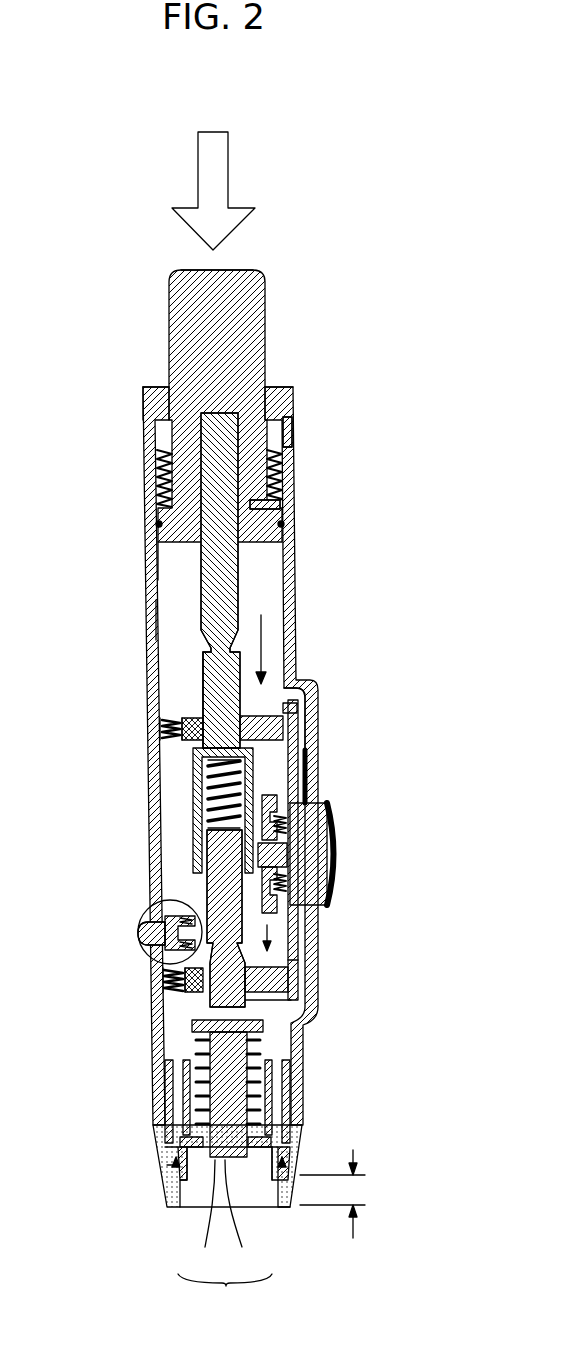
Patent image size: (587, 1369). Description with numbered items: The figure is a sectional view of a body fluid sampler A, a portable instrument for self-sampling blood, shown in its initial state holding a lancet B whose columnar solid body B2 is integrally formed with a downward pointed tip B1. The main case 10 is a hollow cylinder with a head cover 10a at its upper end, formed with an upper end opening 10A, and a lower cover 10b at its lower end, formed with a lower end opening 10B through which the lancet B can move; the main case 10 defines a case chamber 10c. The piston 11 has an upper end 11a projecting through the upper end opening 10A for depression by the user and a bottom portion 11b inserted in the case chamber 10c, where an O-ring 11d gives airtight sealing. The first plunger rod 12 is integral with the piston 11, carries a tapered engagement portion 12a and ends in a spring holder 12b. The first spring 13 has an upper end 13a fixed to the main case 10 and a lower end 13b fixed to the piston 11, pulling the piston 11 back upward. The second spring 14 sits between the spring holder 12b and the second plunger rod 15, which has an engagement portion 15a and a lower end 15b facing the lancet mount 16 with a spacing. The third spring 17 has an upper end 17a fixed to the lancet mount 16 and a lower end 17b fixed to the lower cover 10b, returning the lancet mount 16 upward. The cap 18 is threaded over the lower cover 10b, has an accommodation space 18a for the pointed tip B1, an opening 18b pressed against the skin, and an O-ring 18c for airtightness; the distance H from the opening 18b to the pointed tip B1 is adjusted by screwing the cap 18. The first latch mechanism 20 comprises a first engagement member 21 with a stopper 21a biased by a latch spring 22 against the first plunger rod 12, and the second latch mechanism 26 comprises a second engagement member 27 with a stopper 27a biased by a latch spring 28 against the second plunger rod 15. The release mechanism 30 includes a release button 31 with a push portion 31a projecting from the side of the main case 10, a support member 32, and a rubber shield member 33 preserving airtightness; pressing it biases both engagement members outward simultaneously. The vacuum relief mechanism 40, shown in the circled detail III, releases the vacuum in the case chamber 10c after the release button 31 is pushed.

The body fluid sampler A is at (300, 262).
The main case 10 is at (296, 606).
The head cover 10a is at (294, 395).
The upper end opening 10A is at (143, 386).
The lower cover 10b is at (290, 1140).
The lower end opening 10B is at (262, 1162).
The case chamber 10c is at (187, 613).
The piston 11 is at (272, 340).
The upper end of piston 11a is at (197, 268).
The bottom portion of piston 11b is at (160, 592).
The O-ring 11d is at (156, 527).
The first plunger rod 12 is at (227, 587).
The engagement portion of first plunger rod 12a is at (202, 638).
The spring holder 12b is at (195, 808).
The first spring 13 is at (157, 480).
The upper end of first spring 13a is at (291, 447).
The lower end of first spring 13b is at (283, 503).
The second spring 14 is at (192, 833).
The second plunger rod 15 is at (300, 928).
The engagement portion of second plunger rod 15a is at (297, 962).
The lower end of second plunger rod 15b is at (212, 1005).
The lancet mount 16 is at (197, 1040).
The third spring 17 is at (248, 1085).
The upper end of third spring 17a is at (258, 1040).
The lower end of third spring 17b is at (190, 1142).
The cap 18 is at (150, 1212).
The accommodation space 18a is at (203, 1188).
The opening of cap 18b is at (192, 1207).
The O-ring of cap 18c is at (176, 1165).
The first latch mechanism 20 is at (270, 691).
The first engagement member 21 is at (297, 717).
The stopper of first engagement member 21a is at (197, 743).
The latch spring of first latch mechanism 22 is at (165, 728).
The second latch mechanism 26 is at (270, 1010).
The second engagement member 27 is at (293, 983).
The stopper of second engagement member 27a is at (207, 993).
The latch spring of second latch mechanism 28 is at (163, 978).
The release mechanism 30 is at (342, 790).
The release button 31 is at (335, 832).
The push portion of release button 31a is at (335, 862).
The support member 32 is at (290, 888).
The shield member 33 is at (333, 815).
The vacuum relief mechanism 40 is at (136, 958).
The detail circle III is at (138, 925).
The lancet B is at (225, 1293).
The pointed tip B1 is at (240, 1219).
The columnar solid body B2 is at (201, 1219).
The distance H is at (337, 1194).